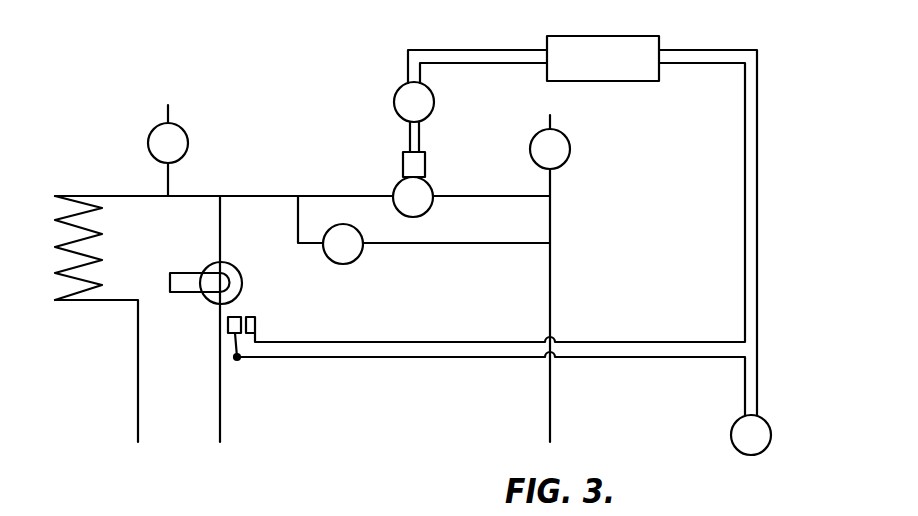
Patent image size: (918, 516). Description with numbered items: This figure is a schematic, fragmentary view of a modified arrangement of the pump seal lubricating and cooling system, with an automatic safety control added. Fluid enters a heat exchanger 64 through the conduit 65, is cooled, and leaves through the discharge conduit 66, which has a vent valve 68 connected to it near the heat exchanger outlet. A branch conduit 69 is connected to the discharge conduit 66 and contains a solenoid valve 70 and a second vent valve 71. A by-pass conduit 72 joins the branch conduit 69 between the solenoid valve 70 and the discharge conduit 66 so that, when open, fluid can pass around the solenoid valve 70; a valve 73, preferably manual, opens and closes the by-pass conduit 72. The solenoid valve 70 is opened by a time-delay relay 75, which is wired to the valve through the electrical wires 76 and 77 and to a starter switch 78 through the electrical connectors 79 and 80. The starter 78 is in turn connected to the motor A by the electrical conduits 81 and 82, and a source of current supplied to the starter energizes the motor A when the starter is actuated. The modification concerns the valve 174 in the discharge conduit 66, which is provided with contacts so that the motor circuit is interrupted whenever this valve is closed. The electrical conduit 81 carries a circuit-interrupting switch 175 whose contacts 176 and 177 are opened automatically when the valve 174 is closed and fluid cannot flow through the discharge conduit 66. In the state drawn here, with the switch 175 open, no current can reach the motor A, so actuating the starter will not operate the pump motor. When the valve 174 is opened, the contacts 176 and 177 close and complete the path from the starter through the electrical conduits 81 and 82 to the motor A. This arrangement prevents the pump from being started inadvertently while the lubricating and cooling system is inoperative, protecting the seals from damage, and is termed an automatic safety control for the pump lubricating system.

The heat exchanger 64 is at (58, 272).
The conduit 65 is at (137, 379).
The discharge conduit 66 is at (220, 194).
The vent valve 68 is at (147, 138).
The branch conduit 69 is at (283, 193).
The solenoid valve 70 is at (430, 184).
The second vent valve 71 is at (571, 149).
The by-pass conduit 72 is at (297, 218).
The valve 73 is at (359, 257).
The relay 75 is at (396, 94).
The electrical wire 76 is at (424, 141).
The electrical wire 77 is at (408, 135).
The starter switch 78 is at (641, 35).
The electrical connector 79 is at (503, 48).
The electrical connector 80 is at (503, 65).
The electrical conduit 81 is at (742, 191).
The electrical conduit 82 is at (758, 256).
The valve 174 is at (213, 272).
The circuit-interrupting switch 175 is at (266, 322).
The contact 176 is at (253, 316).
The contact 177 is at (243, 318).
The motor A is at (733, 446).